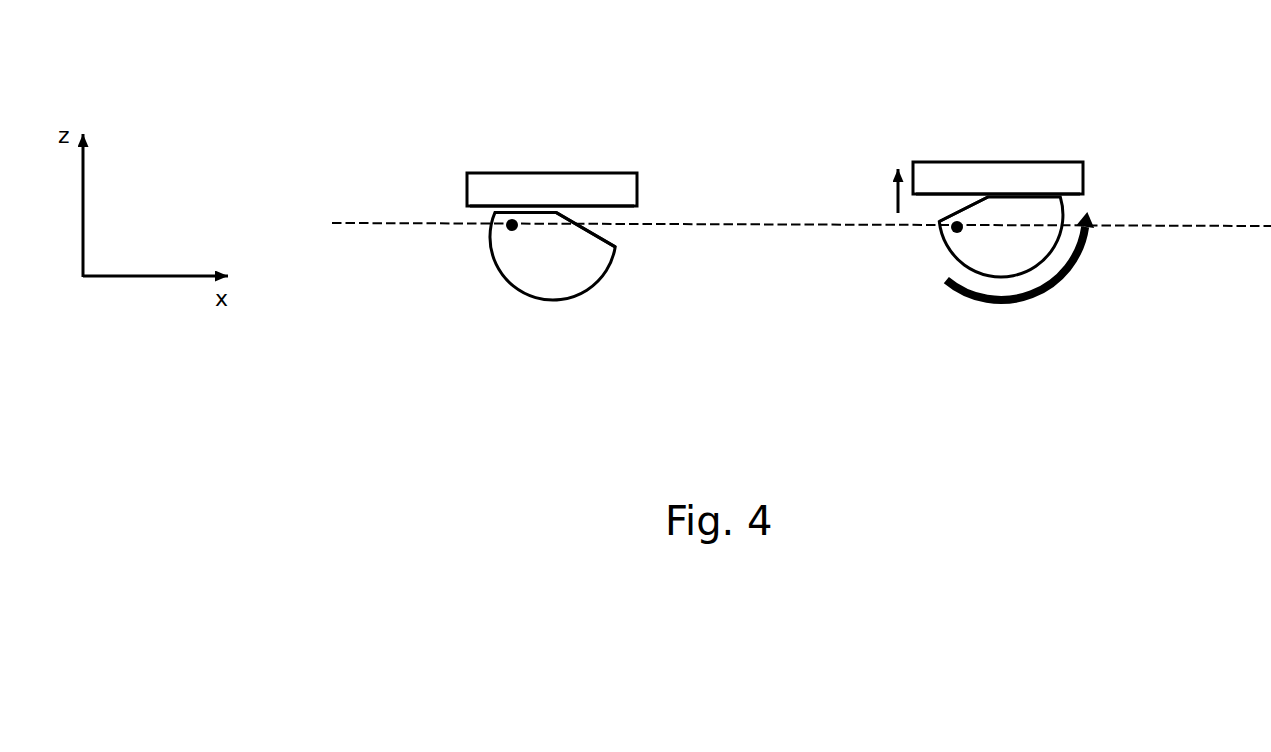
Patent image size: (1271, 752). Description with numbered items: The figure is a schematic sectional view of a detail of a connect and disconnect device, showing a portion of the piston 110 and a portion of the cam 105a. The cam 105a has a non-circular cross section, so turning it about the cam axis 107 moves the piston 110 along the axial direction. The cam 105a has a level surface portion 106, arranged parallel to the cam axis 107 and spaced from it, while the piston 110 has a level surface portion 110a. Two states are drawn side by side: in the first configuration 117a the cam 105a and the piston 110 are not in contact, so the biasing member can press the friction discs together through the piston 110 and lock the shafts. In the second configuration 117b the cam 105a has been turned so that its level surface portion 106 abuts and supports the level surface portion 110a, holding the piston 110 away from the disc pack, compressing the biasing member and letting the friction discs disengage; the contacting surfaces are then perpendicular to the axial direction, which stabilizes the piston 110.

The piston 110 is at (488, 168).
The level surface portion of the piston 110a is at (607, 204).
The cam 105a is at (507, 278).
The level surface portion of the cam 106 is at (582, 228).
The cam axis 107 is at (506, 232).
The first configuration 117a is at (635, 289).
The second configuration 117b is at (1127, 297).